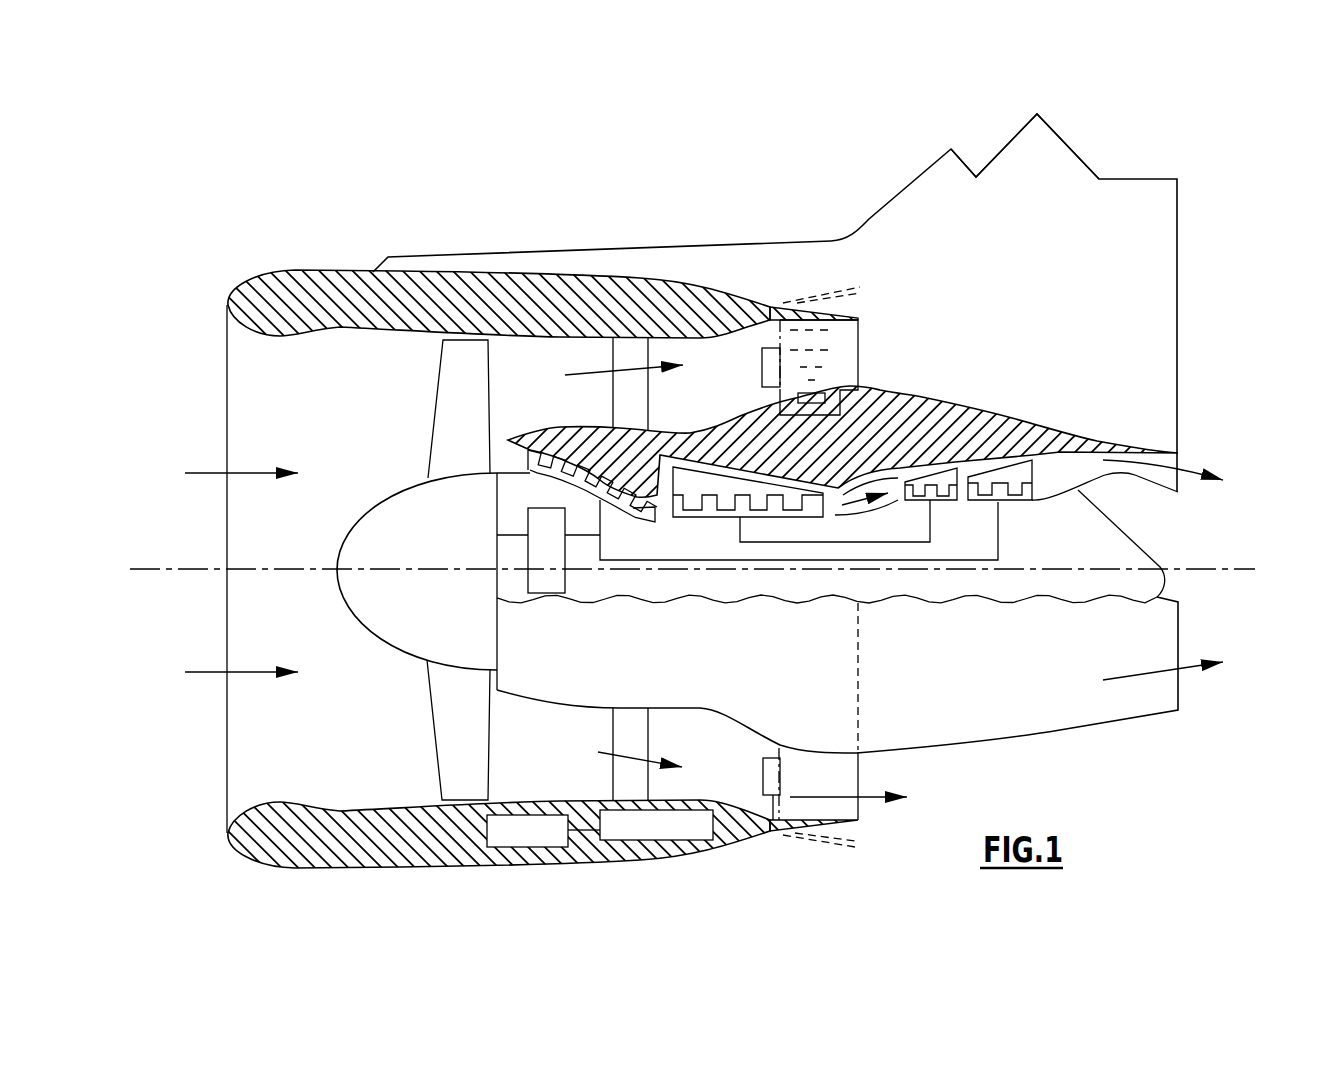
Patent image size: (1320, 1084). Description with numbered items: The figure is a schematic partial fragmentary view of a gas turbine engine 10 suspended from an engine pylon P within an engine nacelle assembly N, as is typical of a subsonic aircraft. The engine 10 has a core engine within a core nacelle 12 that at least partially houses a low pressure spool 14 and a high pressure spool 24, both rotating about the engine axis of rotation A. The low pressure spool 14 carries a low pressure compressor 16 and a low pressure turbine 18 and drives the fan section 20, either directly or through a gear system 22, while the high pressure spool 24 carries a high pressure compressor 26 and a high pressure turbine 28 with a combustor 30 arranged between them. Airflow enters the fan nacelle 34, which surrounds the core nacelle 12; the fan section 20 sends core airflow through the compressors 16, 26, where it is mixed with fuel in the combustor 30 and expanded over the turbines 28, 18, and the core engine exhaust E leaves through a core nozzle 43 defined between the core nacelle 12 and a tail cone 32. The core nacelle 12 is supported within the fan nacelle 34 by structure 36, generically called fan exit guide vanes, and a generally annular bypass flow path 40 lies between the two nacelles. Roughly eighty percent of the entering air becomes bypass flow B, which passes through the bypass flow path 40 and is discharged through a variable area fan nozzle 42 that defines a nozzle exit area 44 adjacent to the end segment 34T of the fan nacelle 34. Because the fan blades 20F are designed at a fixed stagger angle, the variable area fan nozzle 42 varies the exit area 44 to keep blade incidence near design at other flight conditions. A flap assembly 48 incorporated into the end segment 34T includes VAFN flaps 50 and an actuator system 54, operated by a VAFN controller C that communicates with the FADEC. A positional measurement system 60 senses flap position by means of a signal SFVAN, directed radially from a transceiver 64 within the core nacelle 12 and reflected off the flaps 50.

The gas turbine engine 10 is at (282, 226).
The core nacelle 12 is at (1014, 414).
The low pressure spool 14 is at (803, 563).
The low pressure compressor 16 is at (630, 508).
The low pressure turbine 18 is at (1020, 502).
The fan section 20 is at (417, 570).
The fan blades 20F is at (447, 438).
The gear system 22 is at (543, 545).
The high pressure spool 24 is at (783, 543).
The high pressure compressor 26 is at (723, 503).
The high pressure turbine 28 is at (945, 500).
The combustor 30 is at (874, 505).
The tail cone 32 is at (1118, 543).
The fan nacelle 34 is at (525, 303).
The end segment 34T is at (856, 306).
The structure (Fan Exit Guide Vanes) 36 is at (628, 409).
The bypass flow path 40 is at (542, 402).
The variable area fan nozzle 42 is at (824, 268).
The core nozzle 43 is at (1178, 463).
The nozzle exit area 44 is at (858, 762).
The flap assembly 48 is at (856, 288).
The VAFN flaps 50 is at (825, 292).
The actuator system 54 is at (762, 370).
The positional measurement system 60 is at (840, 407).
The transceiver 64 is at (821, 394).
The signal Svafn SFVAN is at (842, 337).
The engine nacelle assembly N is at (620, 258).
The engine pylon P is at (1150, 256).
The engine axis of rotation A is at (1242, 572).
The bypass flow B is at (598, 752).
The VAFN controller C is at (675, 840).
The core engine exhaust E is at (1197, 667).